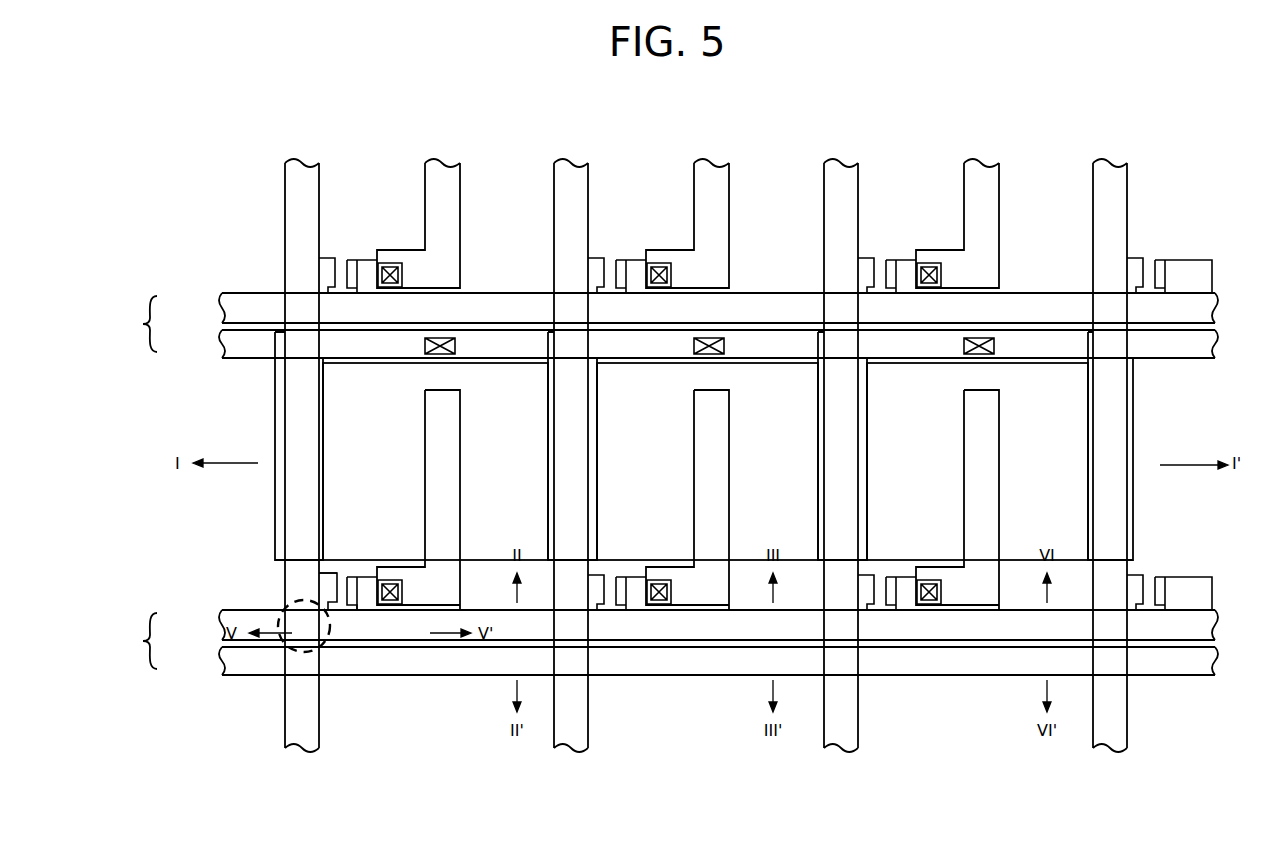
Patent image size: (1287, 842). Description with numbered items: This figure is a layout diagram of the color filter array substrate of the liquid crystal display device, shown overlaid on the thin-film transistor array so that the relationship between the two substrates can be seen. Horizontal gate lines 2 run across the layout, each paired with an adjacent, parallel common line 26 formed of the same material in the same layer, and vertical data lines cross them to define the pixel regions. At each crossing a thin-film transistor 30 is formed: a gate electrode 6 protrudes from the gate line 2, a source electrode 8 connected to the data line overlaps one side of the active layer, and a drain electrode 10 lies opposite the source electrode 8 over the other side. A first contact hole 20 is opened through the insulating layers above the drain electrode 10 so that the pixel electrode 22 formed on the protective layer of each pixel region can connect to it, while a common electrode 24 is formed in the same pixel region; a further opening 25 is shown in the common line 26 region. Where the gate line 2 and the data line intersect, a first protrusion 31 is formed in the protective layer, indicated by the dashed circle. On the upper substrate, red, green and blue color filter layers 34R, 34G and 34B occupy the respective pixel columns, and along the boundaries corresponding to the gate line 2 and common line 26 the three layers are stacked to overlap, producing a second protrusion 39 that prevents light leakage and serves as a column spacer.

The gate line 2 is at (238, 296).
The common line 26 is at (238, 357).
The second protrusion 39 is at (129, 482).
The common electrode 24 is at (276, 413).
The contact hole 25 is at (440, 355).
The pixel electrode 22 is at (450, 584).
The gate electrode 6 is at (344, 574).
The thin-film transistor 30 is at (312, 573).
The source electrode 8 is at (332, 590).
The drain electrode 10 is at (352, 604).
The first contact hole 20 is at (390, 605).
The first protrusion 31 is at (278, 651).
The R color filter layer 34R is at (517, 165).
The G color filter layer 34G is at (774, 165).
The B color filter layer 34B is at (1049, 165).